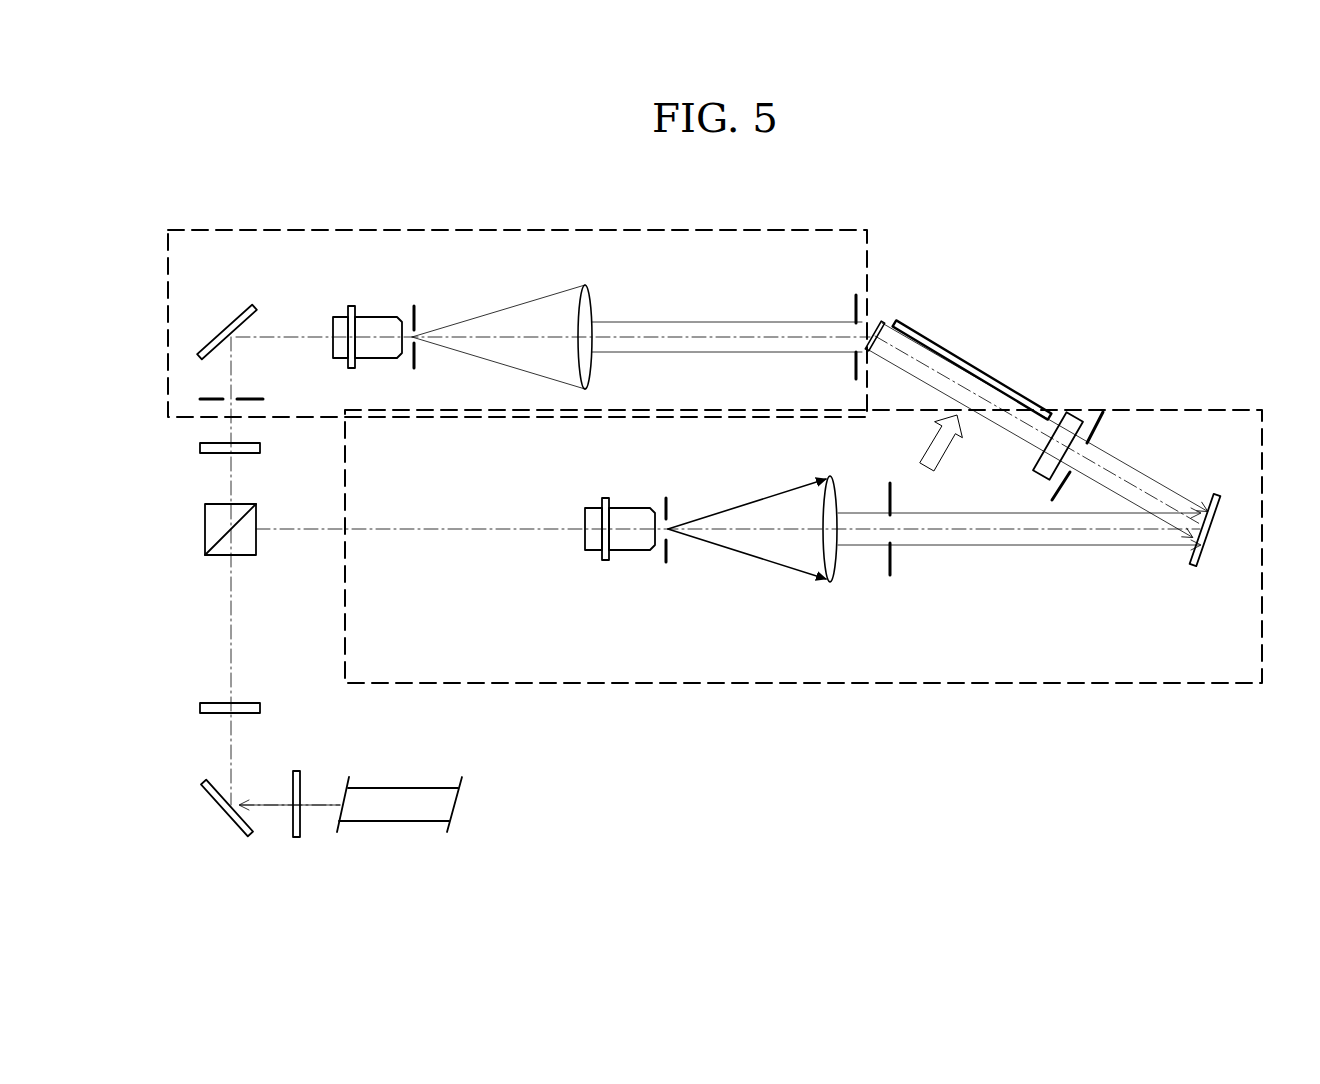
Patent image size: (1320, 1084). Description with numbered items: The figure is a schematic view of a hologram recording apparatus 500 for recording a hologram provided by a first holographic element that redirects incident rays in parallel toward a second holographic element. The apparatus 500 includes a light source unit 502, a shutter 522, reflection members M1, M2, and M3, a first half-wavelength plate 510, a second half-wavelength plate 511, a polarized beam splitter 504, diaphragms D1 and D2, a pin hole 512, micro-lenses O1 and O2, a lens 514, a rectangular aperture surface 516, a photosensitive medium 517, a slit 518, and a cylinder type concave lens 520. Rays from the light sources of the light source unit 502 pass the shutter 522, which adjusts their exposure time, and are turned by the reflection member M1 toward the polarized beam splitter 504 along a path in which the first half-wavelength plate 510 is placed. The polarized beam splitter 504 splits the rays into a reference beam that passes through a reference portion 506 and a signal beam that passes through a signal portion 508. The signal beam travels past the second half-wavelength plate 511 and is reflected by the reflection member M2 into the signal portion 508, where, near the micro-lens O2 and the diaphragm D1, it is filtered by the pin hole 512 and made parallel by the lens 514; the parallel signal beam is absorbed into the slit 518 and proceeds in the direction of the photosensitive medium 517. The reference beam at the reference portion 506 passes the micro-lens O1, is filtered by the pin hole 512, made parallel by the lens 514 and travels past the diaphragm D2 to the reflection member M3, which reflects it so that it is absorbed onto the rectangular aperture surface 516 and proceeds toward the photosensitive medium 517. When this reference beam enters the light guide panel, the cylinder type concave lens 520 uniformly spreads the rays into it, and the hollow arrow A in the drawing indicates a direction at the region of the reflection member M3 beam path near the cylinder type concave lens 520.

The hologram recording apparatus 500 is at (1209, 272).
The light source unit 502 is at (390, 821).
The polarized beam splitter 504 is at (205, 522).
The reference portion 506 is at (814, 685).
The signal portion 508 is at (518, 230).
The first half-wavelength plate 510 is at (200, 708).
The second half-wavelength plate 511 is at (200, 448).
The pin hole 512 is at (416, 305).
The lens 514 is at (590, 292).
The rectangular aperture surface 516 is at (1105, 425).
The photosensitive medium 517 is at (890, 320).
The slit 518 is at (855, 300).
The cylinder type concave lens 520 is at (1073, 413).
The shutter 522 is at (296, 838).
The reflection member M1 is at (232, 818).
The reflection member M2 is at (232, 318).
The reflection member M3 is at (1197, 570).
The micro-lens O1 is at (628, 508).
The micro-lens O2 is at (373, 318).
The diaphragm D1 is at (200, 397).
The diaphragm D2 is at (892, 565).
The direction A is at (942, 452).